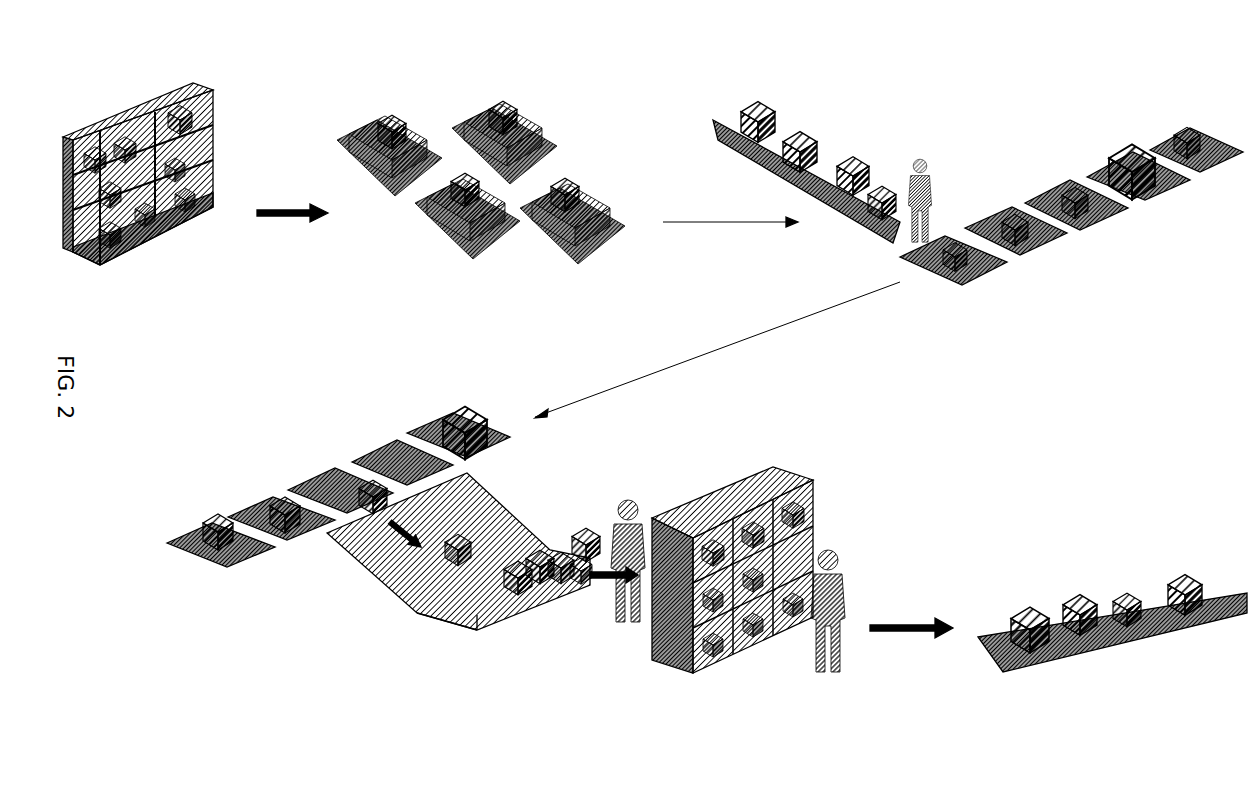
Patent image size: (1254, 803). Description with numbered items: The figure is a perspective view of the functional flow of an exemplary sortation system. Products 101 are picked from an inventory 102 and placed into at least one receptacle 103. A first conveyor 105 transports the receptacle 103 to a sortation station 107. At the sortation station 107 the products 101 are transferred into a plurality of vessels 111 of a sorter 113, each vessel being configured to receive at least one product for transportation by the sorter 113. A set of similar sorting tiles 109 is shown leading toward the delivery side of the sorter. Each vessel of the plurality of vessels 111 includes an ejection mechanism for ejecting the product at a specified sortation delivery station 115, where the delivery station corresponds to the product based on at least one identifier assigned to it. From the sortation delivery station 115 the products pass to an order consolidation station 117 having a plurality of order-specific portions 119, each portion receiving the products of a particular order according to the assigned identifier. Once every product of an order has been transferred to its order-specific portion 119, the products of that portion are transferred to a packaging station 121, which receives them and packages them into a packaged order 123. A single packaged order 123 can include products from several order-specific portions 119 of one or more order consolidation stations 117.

The products 101 is at (520, 193).
The inventory 102 is at (162, 243).
The receptacle 103 is at (432, 243).
The first conveyor 105 is at (730, 212).
The sortation station 107 is at (966, 173).
The sorting tiles 109 is at (338, 487).
The vessels 111 is at (1213, 170).
The sorter 113 is at (717, 350).
The sortation delivery station 115 is at (505, 532).
The order consolidation station 117 is at (739, 576).
The order-specific portions 119 is at (763, 552).
The packaging station 121 is at (1112, 606).
The packaged order 123 is at (1187, 583).